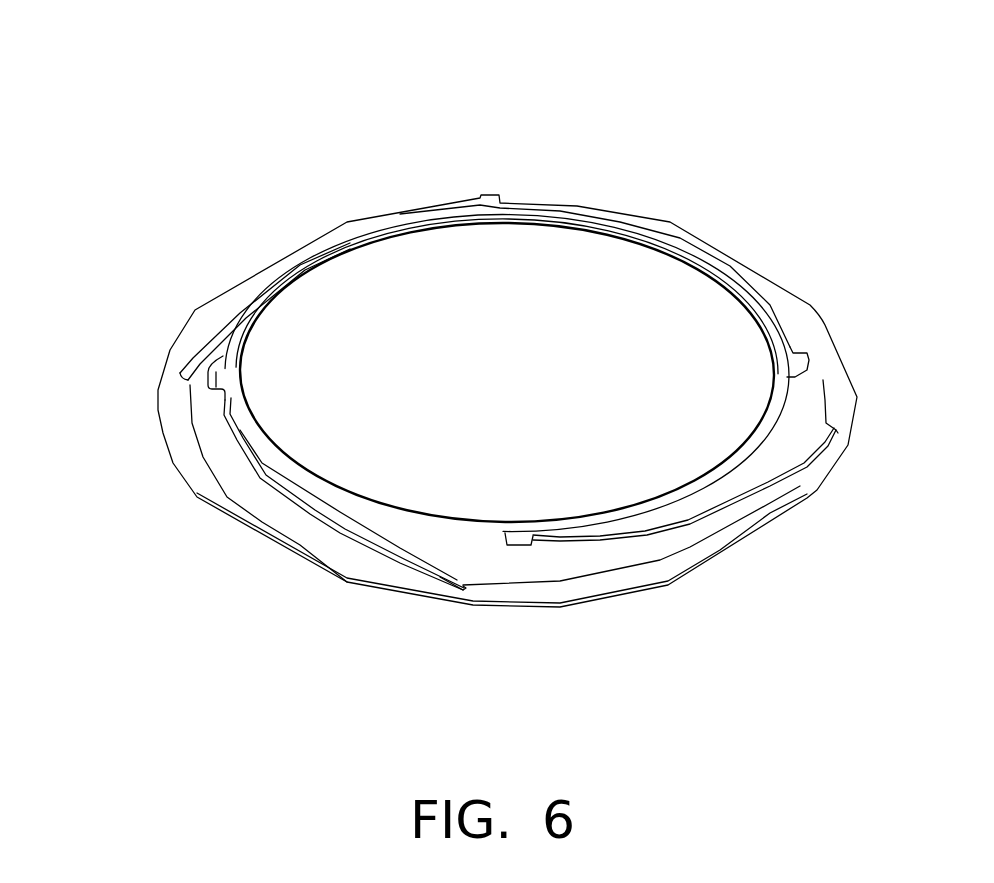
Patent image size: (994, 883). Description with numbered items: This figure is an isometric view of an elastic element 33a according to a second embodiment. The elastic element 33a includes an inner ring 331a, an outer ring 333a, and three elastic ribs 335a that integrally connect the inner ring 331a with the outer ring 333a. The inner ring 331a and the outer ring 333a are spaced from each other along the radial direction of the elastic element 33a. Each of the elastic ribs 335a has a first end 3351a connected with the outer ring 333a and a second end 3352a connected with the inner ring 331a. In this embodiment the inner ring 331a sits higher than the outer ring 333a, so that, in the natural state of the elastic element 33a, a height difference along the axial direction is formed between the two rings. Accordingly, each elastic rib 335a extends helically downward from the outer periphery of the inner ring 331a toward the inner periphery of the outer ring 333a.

The elastic element 33a is at (447, 356).
The inner ring 331a is at (393, 515).
The outer ring 333a is at (188, 449).
The elastic ribs 335a is at (438, 442).
The first end 3351a is at (465, 590).
The second end 3352a is at (208, 387).